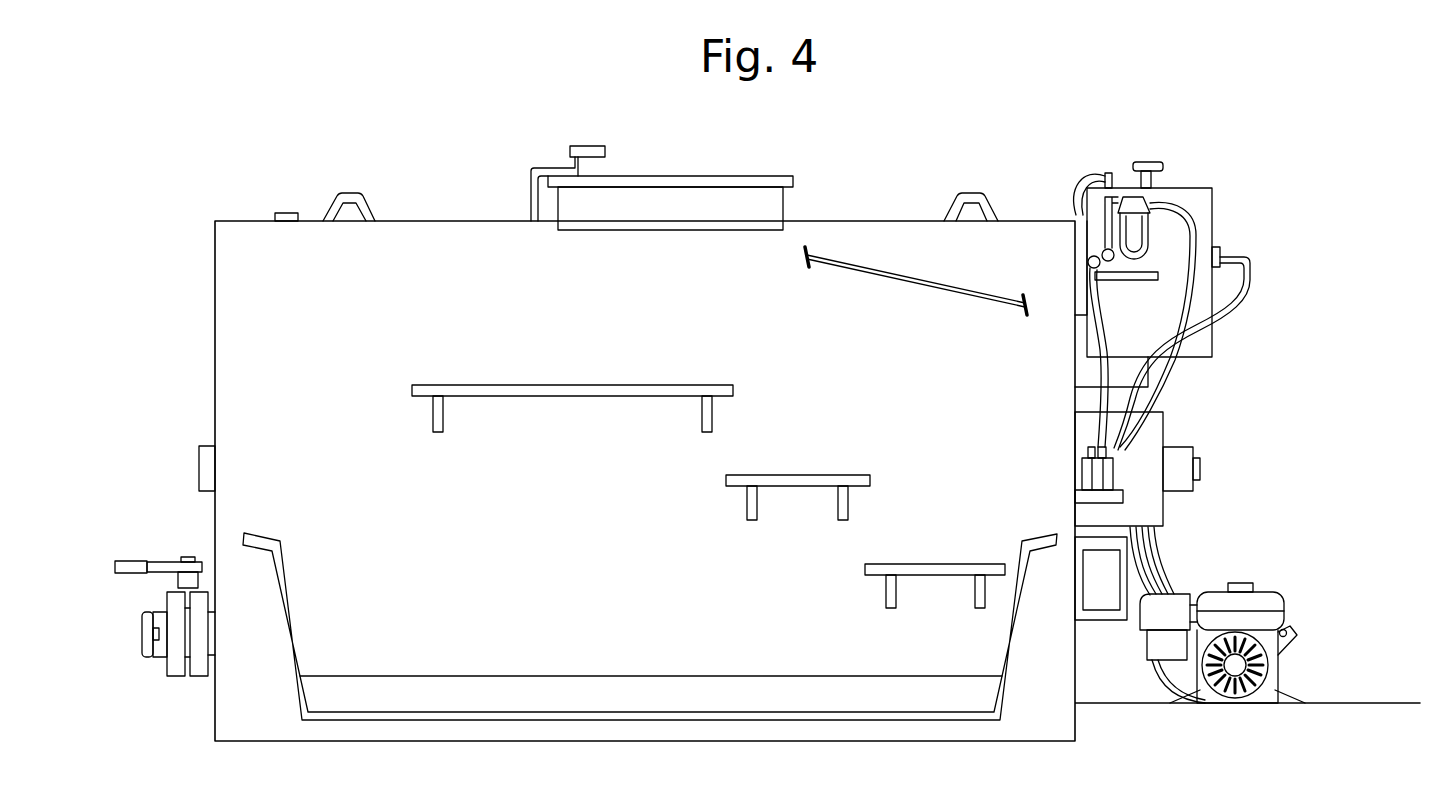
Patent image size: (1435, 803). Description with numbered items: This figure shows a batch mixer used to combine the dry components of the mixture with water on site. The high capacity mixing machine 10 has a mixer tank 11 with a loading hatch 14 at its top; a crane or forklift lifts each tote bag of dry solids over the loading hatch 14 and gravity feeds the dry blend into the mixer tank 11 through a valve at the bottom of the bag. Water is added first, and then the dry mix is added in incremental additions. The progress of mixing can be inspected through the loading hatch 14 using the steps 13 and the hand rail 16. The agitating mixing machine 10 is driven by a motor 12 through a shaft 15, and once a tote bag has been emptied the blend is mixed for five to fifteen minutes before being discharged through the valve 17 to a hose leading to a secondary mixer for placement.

The high capacity mixing machine 10 is at (419, 150).
The mixer tank 11 is at (353, 315).
The motor 12 is at (1293, 600).
The steps 13 is at (567, 383).
The loading hatch 14 is at (672, 173).
The shaft 15 is at (1202, 468).
The hand rail 16 is at (983, 292).
The valve 17 is at (142, 633).